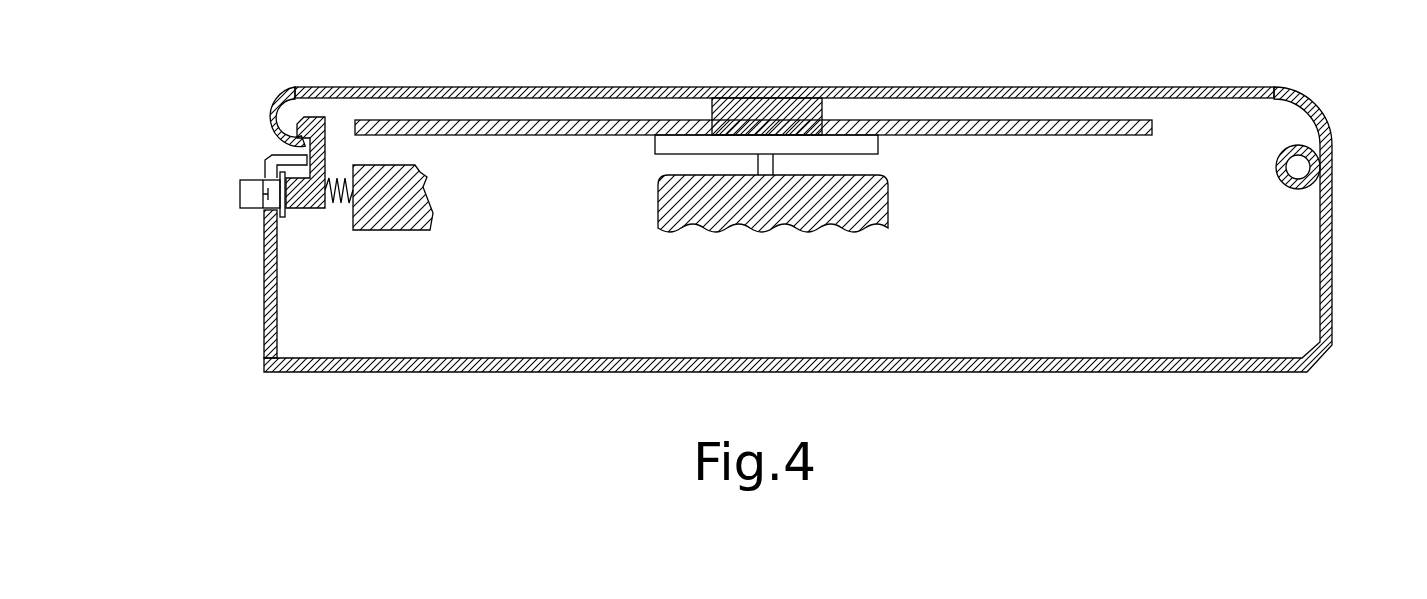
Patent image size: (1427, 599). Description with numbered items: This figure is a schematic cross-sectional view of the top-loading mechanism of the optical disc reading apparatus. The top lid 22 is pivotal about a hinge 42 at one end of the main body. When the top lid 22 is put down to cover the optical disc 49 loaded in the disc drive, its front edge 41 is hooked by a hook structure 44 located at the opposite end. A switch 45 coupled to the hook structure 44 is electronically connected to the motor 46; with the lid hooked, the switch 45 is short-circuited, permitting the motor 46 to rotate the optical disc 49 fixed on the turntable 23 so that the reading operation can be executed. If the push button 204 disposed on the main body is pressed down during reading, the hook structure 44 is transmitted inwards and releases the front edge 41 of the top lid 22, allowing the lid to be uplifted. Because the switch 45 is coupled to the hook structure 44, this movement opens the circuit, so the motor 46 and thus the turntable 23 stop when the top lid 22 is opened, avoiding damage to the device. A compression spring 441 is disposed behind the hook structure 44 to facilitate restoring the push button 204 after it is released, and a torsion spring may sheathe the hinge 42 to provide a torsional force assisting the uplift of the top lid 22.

The top lid 22 is at (602, 90).
The turntable 23 is at (765, 99).
The front edge 41 is at (272, 134).
The hinge 42 is at (1302, 146).
The hook structure 44 is at (305, 117).
The switch 45 is at (385, 183).
The motor 46 is at (783, 198).
The optical disc 49 is at (973, 130).
The push button 204 is at (252, 186).
The compression spring 441 is at (266, 230).